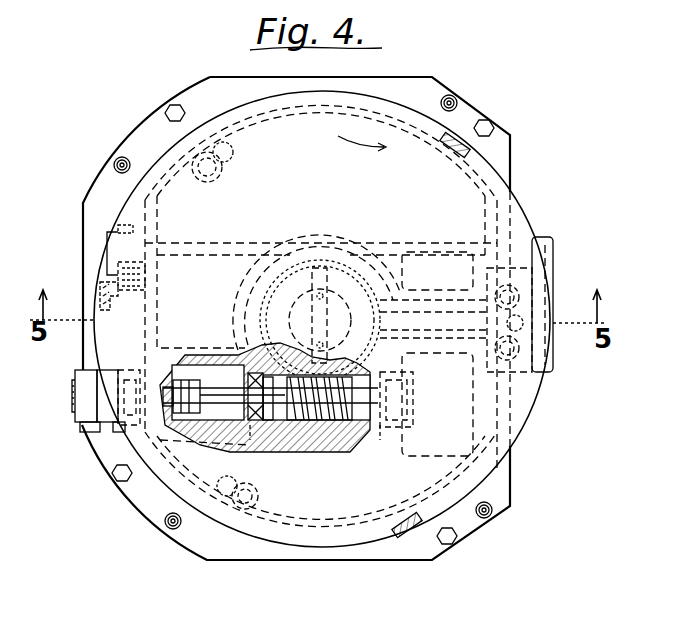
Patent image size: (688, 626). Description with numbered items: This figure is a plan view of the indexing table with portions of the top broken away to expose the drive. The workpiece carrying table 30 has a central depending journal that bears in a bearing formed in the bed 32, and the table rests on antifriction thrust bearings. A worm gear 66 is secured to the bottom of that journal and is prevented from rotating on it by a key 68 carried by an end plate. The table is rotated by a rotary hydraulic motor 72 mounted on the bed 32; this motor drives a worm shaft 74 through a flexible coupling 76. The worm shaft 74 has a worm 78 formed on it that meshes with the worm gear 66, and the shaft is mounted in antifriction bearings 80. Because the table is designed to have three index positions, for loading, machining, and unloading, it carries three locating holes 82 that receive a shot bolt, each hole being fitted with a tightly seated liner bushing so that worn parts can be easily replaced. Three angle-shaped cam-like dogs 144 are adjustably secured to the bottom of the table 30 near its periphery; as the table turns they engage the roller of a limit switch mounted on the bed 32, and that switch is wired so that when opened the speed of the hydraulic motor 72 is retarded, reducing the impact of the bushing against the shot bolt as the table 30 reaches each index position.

The workpiece carrying table 30 is at (500, 445).
The bed 32 is at (472, 530).
The worm gear 66 is at (360, 257).
The key 68 is at (320, 243).
The rotary hydraulic motor 72 is at (95, 415).
The worm shaft 74 is at (216, 392).
The flexible coupling 76 is at (190, 392).
The worm 78 is at (327, 427).
The antifriction bearings 80 is at (252, 424).
The locating holes 82 is at (200, 160).
The cam-like dogs 144 is at (455, 148).